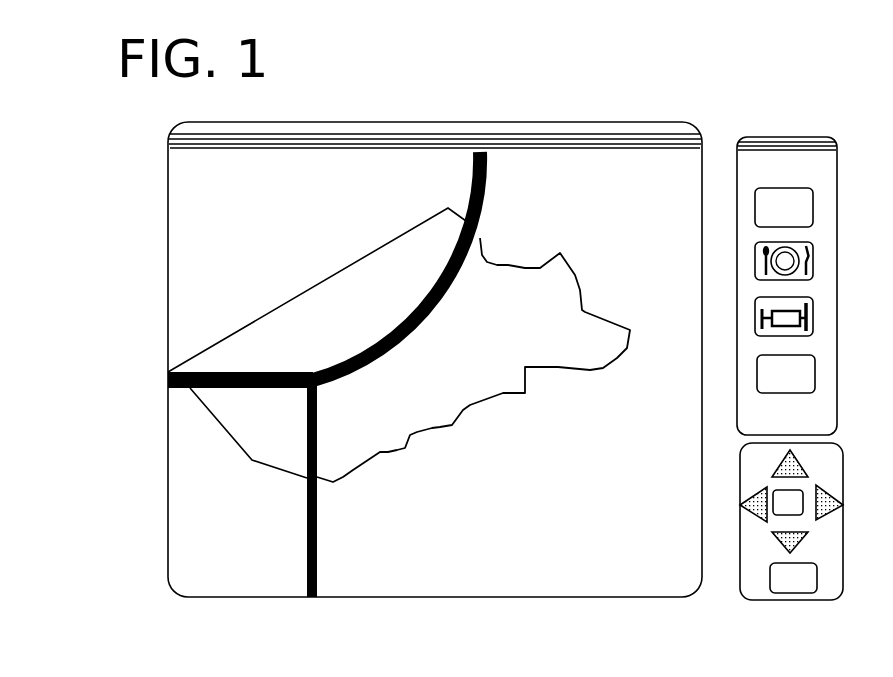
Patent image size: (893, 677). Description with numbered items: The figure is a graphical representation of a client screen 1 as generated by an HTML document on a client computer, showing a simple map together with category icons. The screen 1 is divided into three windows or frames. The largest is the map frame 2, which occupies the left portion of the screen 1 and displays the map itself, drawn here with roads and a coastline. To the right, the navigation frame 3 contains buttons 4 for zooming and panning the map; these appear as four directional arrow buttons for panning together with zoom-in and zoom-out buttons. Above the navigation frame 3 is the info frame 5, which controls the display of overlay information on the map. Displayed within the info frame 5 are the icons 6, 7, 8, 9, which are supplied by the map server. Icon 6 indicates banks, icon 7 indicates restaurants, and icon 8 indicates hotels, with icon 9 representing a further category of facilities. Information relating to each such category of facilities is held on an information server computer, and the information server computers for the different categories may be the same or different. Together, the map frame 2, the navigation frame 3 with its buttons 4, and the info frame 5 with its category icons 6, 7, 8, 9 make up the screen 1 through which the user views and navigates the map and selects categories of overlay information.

The screen 1 is at (130, 263).
The map frame 2 is at (452, 122).
The navigation frame 3 is at (823, 542).
The buttons 4 is at (800, 470).
The info frame 5 is at (820, 297).
The icon 6 is at (815, 207).
The icon 7 is at (815, 262).
The icon 8 is at (815, 322).
The icon 9 is at (817, 373).